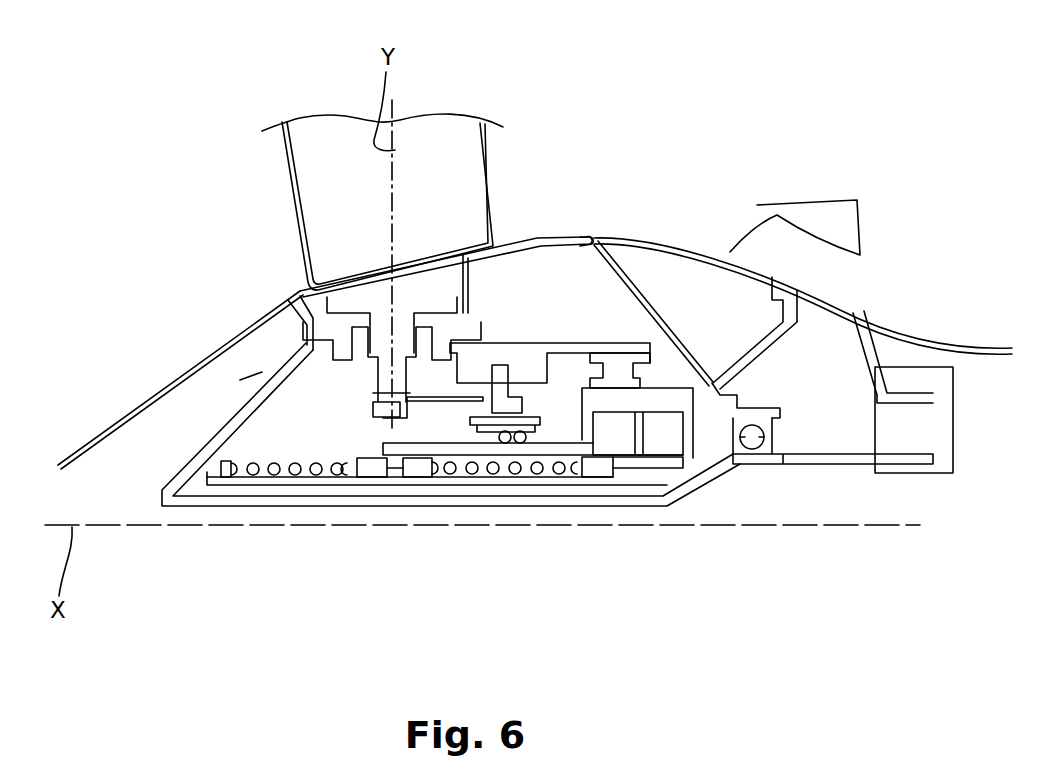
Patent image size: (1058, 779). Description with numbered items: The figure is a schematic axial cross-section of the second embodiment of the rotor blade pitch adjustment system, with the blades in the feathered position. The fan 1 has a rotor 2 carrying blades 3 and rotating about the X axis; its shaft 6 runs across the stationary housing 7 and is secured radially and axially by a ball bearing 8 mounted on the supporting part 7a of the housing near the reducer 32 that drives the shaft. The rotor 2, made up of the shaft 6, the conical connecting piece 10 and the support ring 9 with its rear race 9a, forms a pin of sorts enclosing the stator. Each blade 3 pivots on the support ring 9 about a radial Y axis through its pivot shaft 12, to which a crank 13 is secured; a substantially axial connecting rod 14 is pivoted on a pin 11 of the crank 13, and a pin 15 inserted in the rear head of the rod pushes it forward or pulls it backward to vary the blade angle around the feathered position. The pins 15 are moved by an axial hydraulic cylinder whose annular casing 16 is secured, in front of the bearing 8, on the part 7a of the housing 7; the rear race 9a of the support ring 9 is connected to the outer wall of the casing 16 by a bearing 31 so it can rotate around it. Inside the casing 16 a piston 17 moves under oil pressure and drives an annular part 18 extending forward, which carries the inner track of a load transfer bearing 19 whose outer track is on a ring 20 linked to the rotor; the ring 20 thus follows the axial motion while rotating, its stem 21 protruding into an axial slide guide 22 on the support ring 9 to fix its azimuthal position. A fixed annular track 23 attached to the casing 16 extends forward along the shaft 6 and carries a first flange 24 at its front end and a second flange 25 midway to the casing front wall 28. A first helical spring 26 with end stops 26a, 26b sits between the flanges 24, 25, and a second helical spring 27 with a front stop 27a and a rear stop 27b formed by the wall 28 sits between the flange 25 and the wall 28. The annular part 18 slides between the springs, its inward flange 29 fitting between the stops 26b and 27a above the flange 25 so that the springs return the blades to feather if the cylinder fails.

The fan 1 is at (161, 268).
The rotor 2 is at (91, 388).
The blades 3 is at (313, 190).
The shaft 6 is at (312, 498).
The stationary housing 7 is at (856, 294).
The supporting part 7a is at (762, 345).
The bearing 8 is at (767, 438).
The support ring 9 is at (342, 320).
The rear race 9a is at (594, 236).
The conical connecting piece 10 is at (253, 398).
The pin 11 is at (372, 410).
The pivot shaft 12 is at (375, 388).
The crank 13 is at (372, 398).
The connecting rod 14 is at (443, 410).
The pin 15 is at (497, 410).
The casing 16 is at (540, 488).
The piston 17 is at (645, 432).
The annular part 18 is at (458, 447).
The load transfer bearing 19 is at (617, 367).
The ring 20 is at (530, 442).
The stem 21 is at (500, 366).
The axial slide guide 22 is at (527, 367).
The fixed annular track 23 is at (410, 474).
The first flange 24 is at (207, 472).
The second flange 25 is at (400, 475).
The first helical spring 26 is at (273, 472).
The front stop of first spring 26a is at (228, 472).
The rear stop of first spring 26b is at (370, 472).
The second helical spring 27 is at (493, 470).
The front stop of second spring 27a is at (418, 473).
The rear stop of second spring 27b is at (548, 477).
The front wall 28 is at (588, 464).
The flange 29 is at (378, 452).
The bearing 31 is at (617, 357).
The reducer 32 is at (898, 460).